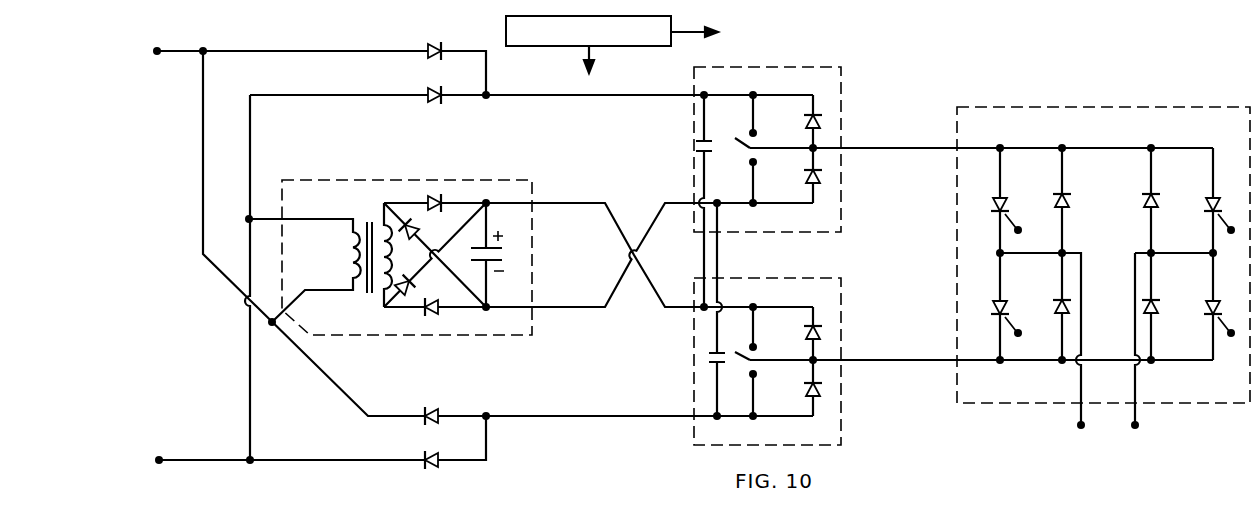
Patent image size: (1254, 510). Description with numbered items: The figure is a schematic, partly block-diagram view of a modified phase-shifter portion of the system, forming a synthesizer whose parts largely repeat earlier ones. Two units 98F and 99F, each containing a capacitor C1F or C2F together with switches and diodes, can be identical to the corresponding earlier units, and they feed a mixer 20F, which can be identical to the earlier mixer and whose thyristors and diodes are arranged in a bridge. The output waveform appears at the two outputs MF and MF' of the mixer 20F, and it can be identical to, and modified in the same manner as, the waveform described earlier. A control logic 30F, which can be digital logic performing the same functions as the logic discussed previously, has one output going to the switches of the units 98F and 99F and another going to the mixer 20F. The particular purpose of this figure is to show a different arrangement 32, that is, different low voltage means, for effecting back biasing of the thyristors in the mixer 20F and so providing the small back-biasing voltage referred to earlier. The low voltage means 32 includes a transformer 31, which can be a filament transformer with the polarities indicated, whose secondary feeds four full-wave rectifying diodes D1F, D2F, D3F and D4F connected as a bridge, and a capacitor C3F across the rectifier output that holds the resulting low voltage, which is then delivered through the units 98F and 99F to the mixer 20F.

The control logic 30F is at (506, 27).
The transformer 31 is at (377, 226).
The low voltage means 32 is at (412, 253).
The full-wave rectifying diode D1F is at (435, 200).
The full-wave rectifying diode D2F is at (410, 226).
The full-wave rectifying diode D3F is at (403, 292).
The full-wave rectifying diode D4F is at (432, 315).
The capacitor C3F is at (503, 248).
The unit 98F is at (762, 182).
The unit 99F is at (763, 324).
The capacitor C1F is at (697, 148).
The capacitor C2F is at (712, 365).
The mixer 20F is at (1103, 256).
The output MF is at (1058, 356).
The output MF' is at (1151, 356).